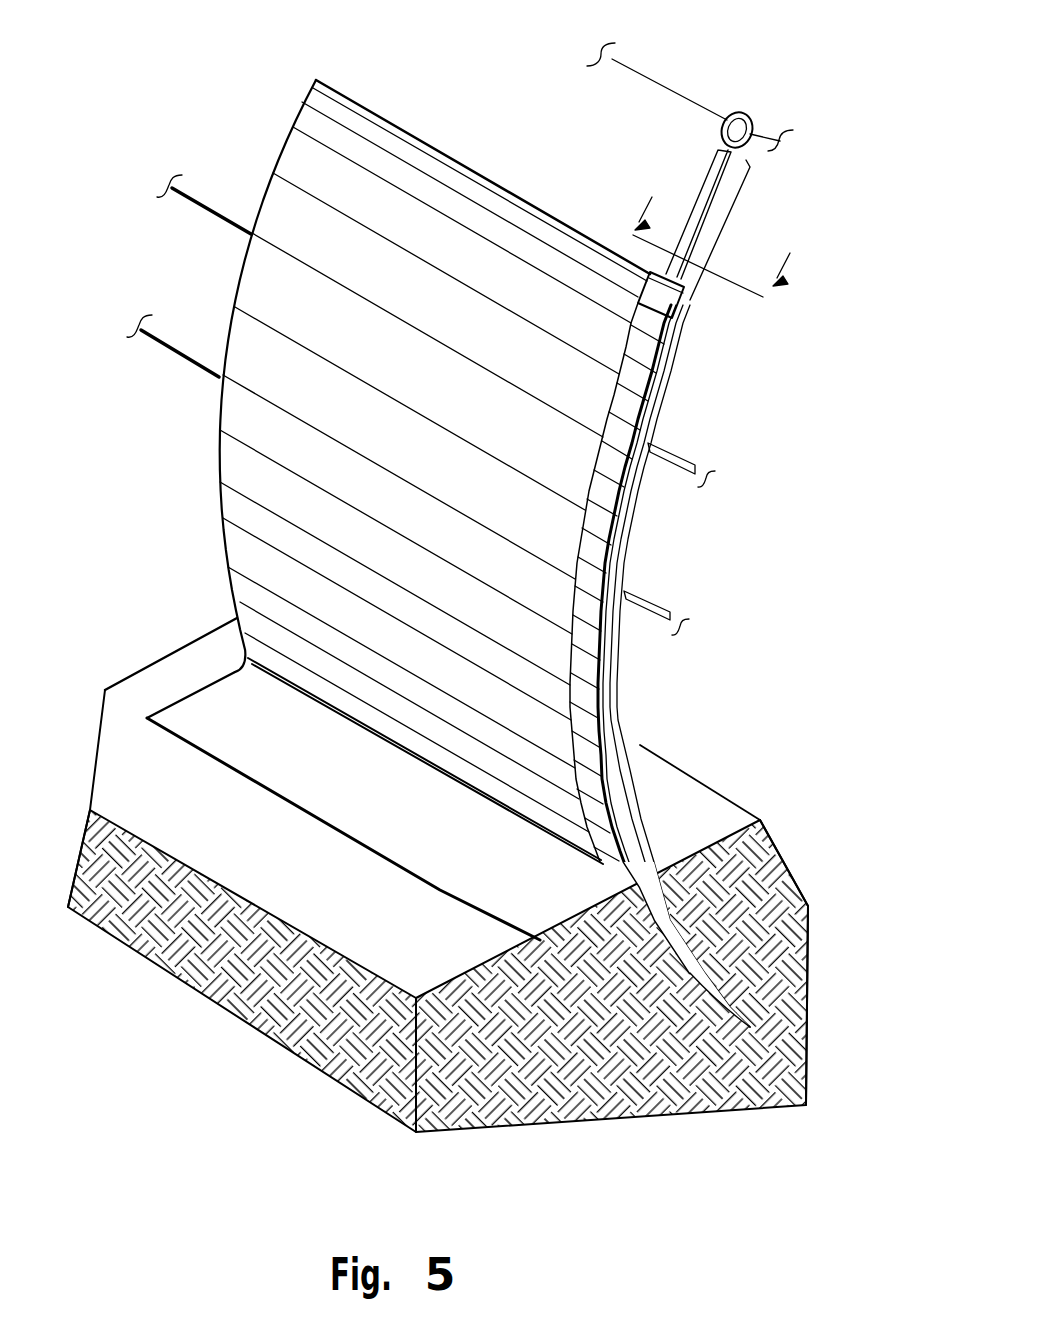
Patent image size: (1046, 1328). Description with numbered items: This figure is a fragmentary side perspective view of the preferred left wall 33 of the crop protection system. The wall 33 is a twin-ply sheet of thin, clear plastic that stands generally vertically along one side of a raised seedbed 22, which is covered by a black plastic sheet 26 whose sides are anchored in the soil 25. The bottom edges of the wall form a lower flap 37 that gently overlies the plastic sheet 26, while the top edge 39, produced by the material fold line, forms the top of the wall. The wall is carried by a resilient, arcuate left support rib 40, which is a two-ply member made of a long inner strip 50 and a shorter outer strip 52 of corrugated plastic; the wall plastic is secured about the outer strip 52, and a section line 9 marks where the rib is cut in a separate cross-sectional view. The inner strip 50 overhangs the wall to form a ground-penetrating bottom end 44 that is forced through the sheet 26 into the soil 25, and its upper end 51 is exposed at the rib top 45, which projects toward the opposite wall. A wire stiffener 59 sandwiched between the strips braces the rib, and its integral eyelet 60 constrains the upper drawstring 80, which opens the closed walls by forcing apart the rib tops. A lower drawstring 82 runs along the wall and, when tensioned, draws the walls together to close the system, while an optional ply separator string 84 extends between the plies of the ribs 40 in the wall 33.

The section line 9- 9 is at (716, 232).
The seedbed 22 is at (708, 813).
The soil 25 is at (788, 1075).
The plastic sheet 26 is at (702, 800).
The left wall 33 is at (182, 457).
The lower flap 37 is at (327, 783).
The top edge 39 is at (455, 155).
The left support rib 40 is at (664, 509).
The bottom end of rib 44 is at (687, 986).
The rib top 45 is at (797, 196).
The inner rib strip 50 is at (640, 782).
The upper end of inner strip 51 is at (717, 167).
The outer rib strip 52 is at (590, 660).
The wire stiffener 59 is at (755, 177).
The eyelet 60 is at (740, 117).
The upper drawstring 80 is at (614, 56).
The lower drawstring 82 is at (684, 458).
The ply separator string 84 is at (662, 606).